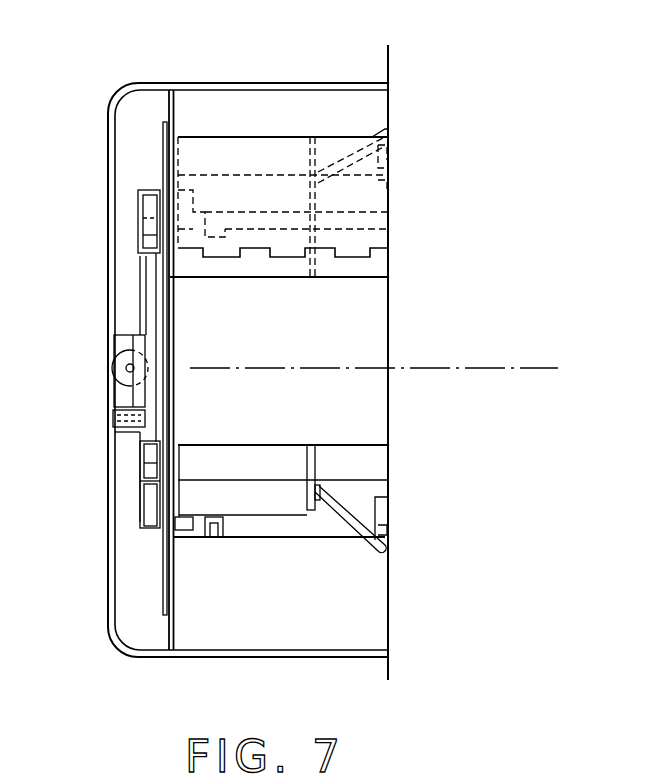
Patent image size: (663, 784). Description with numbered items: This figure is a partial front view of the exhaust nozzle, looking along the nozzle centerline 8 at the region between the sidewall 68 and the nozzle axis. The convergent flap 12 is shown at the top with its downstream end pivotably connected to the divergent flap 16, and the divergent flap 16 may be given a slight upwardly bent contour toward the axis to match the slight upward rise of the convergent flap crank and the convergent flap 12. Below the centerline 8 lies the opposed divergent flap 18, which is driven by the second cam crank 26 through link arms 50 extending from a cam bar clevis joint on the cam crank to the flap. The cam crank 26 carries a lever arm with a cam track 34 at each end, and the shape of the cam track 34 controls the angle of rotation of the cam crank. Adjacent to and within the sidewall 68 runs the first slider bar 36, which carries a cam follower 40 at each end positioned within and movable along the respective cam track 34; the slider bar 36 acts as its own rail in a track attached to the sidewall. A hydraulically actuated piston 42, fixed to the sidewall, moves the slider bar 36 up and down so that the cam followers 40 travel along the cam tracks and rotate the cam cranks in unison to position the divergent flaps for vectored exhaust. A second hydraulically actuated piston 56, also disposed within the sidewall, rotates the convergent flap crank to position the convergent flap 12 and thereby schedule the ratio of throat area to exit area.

The nozzle centerline 8 is at (464, 366).
The convergent flap 12 is at (248, 267).
The divergent flap 16 is at (243, 150).
The divergent flap 18 is at (350, 445).
The second cam crank 26 is at (260, 500).
The cam track 34 is at (155, 527).
The first slider bar 36 is at (147, 265).
The cam follower 40 is at (150, 190).
The hydraulically actuated piston 42 is at (133, 347).
The link arm 50 is at (384, 547).
The hydraulically actuated piston 56 is at (126, 365).
The sidewall 68 is at (176, 330).